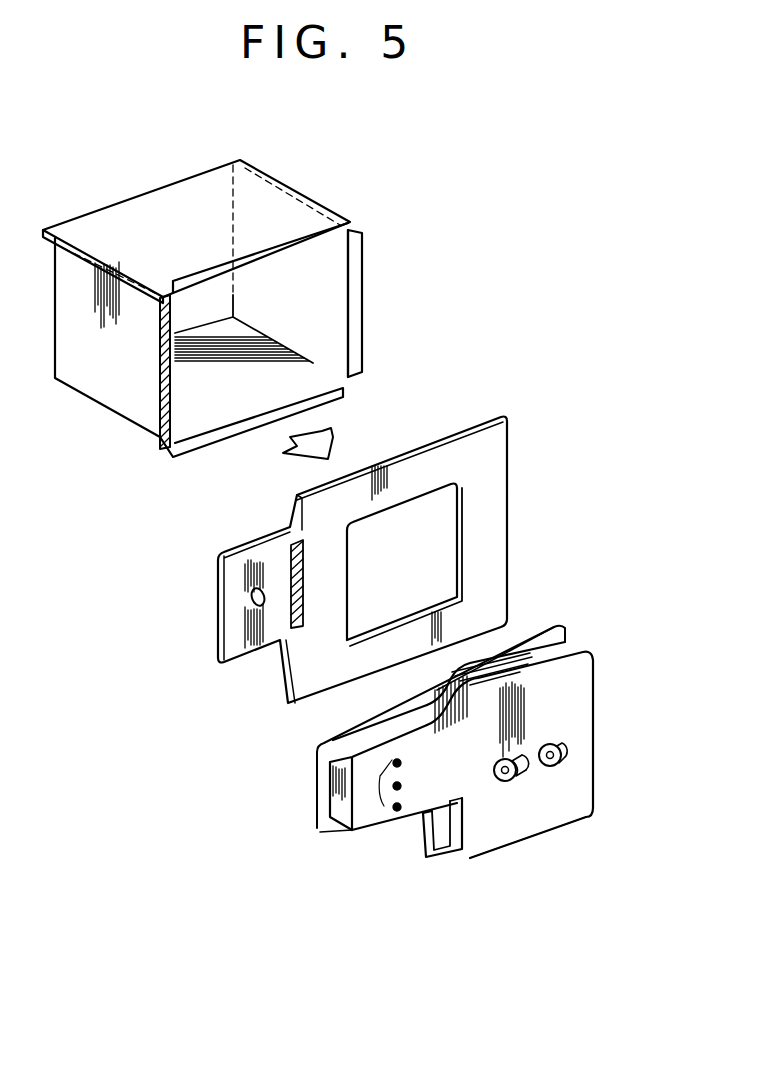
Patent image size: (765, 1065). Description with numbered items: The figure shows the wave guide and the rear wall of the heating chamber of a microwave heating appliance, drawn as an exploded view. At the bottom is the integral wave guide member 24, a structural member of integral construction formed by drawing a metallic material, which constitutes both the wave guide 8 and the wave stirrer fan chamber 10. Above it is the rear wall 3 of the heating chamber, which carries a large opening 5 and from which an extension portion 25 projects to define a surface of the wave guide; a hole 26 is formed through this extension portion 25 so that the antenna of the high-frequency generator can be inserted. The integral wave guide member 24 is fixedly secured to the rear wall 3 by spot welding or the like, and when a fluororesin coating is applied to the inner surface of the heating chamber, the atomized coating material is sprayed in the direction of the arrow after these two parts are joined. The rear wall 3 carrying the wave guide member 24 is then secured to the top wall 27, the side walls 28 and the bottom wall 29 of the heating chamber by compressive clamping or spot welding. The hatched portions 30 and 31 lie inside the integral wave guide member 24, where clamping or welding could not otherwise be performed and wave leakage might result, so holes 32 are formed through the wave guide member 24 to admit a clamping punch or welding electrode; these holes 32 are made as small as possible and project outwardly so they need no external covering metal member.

The rear wall 3 is at (497, 450).
The window opening 5 is at (430, 555).
The wave guide 8 is at (362, 845).
The wave stirrer fan chamber 10 is at (594, 816).
The integral wave guide member 24 is at (500, 830).
The extension portion 25 is at (228, 618).
The hole 26 is at (247, 597).
The top wall 27 is at (275, 198).
The side wall 28 is at (320, 277).
The bottom wall 29 is at (303, 368).
The hatched portion 30 is at (286, 633).
The hatched portion 31 is at (157, 368).
The holes 32 is at (378, 783).